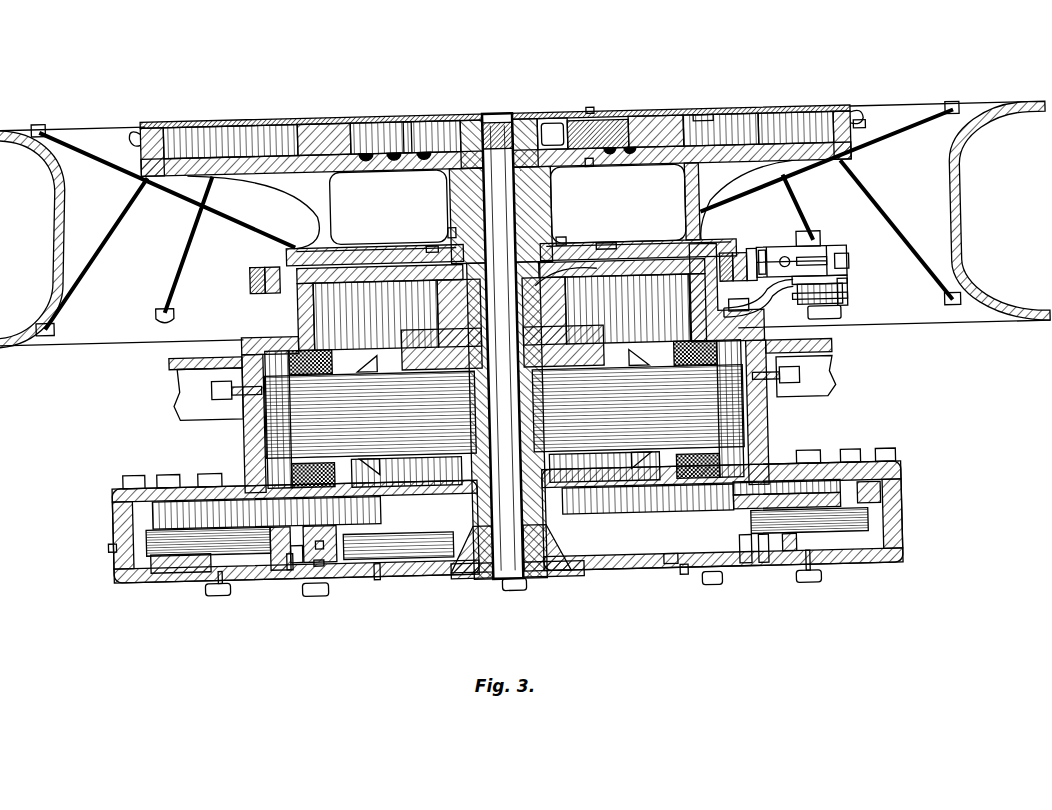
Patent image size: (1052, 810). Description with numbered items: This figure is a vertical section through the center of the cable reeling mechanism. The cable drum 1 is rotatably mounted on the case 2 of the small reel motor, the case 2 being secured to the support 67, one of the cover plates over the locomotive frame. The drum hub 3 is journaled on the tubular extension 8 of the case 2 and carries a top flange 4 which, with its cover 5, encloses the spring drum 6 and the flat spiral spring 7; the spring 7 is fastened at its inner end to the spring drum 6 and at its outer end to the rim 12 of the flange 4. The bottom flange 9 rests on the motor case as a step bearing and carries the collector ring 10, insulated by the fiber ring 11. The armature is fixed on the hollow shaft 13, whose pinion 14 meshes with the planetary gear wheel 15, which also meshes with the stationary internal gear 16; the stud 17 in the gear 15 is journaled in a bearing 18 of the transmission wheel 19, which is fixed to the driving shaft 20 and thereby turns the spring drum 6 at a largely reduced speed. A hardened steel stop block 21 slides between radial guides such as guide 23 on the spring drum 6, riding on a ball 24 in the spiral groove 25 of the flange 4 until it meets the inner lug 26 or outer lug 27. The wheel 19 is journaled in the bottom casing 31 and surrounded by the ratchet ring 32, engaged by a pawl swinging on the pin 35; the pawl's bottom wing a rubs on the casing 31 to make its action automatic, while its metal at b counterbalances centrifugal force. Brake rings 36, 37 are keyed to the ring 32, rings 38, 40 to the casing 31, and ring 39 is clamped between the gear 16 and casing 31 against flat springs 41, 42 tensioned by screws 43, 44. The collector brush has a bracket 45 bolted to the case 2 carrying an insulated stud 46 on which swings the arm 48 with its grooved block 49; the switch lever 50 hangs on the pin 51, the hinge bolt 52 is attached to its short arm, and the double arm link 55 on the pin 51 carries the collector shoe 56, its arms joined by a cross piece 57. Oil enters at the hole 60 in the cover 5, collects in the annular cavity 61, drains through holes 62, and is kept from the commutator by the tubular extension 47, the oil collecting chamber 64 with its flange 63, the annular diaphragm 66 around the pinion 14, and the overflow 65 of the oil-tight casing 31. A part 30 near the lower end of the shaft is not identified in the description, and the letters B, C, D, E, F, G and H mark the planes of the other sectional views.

The cable drum 1 is at (525, 223).
The motor case 2 is at (858, 471).
The drum hub 3 is at (548, 207).
The top flange 4 is at (661, 163).
The cover 5 is at (307, 116).
The spring drum 6 is at (706, 167).
The spiral spring 7 is at (785, 128).
The tubular extension 8 is at (467, 120).
The bottom flange 9 is at (294, 247).
The collector ring 10 is at (744, 258).
The fiber ring 11 is at (731, 252).
The rim 12 is at (152, 123).
The hollow shaft 13 is at (566, 578).
The pinion 14 is at (439, 571).
The planetary gear wheel 15 is at (649, 573).
The stationary internal gear 16 is at (900, 492).
The stud 17 is at (679, 574).
The bearing 18 is at (679, 567).
The transmission wheel 19 is at (373, 576).
The driving shaft 20 is at (511, 583).
The stop block 21 is at (672, 113).
The radial guide 23 is at (710, 106).
The steel ball 24 is at (624, 112).
The spiral groove 25 is at (636, 152).
The inner lug 26 is at (400, 161).
The outer lug 27 is at (720, 108).
The nut 30 is at (533, 573).
The bottom casing 31 is at (406, 574).
The ratchet ring 32 is at (278, 591).
The pin 35 is at (289, 557).
The brake ring 36 is at (779, 569).
The brake ring 37 is at (759, 569).
The brake ring 38 is at (889, 572).
The brake ring 39 is at (899, 519).
The brake ring 40 is at (866, 571).
The flat spring 41 is at (193, 575).
The flat spring 42 is at (819, 570).
The screw 43 is at (212, 589).
The screw 44 is at (806, 587).
The bracket 45 is at (772, 306).
The stud 46 is at (849, 321).
The tubular downward extension 47 is at (611, 249).
The metal arm 48 is at (861, 261).
The grooved block 49 is at (850, 276).
The switch lever 50 is at (836, 270).
The pin 51 is at (850, 301).
The hinge bolt 52 is at (800, 267).
The double arm link 55 is at (850, 288).
The collector shoe 56 is at (761, 251).
The cross piece 57 is at (790, 266).
The oil hole 60 is at (764, 111).
The annular cavity 61 is at (454, 231).
The holes 62 is at (567, 243).
The inwardly projecting flange 63 is at (538, 286).
The oil collecting chamber 64 is at (437, 248).
The overflow 65 is at (898, 502).
The annular diaphragm 66 is at (758, 469).
The support 67 is at (502, 381).
The section line G—H G is at (414, 132).
The section line E—F E is at (597, 109).
The section line E— F is at (596, 172).
The section line G— H is at (870, 133).
The section line A— B is at (850, 268).
The section line C—D C is at (109, 538).
The section line C— D is at (398, 544).
The bottom wing of the pawl a is at (313, 558).
The pawl counterbalance b is at (319, 546).